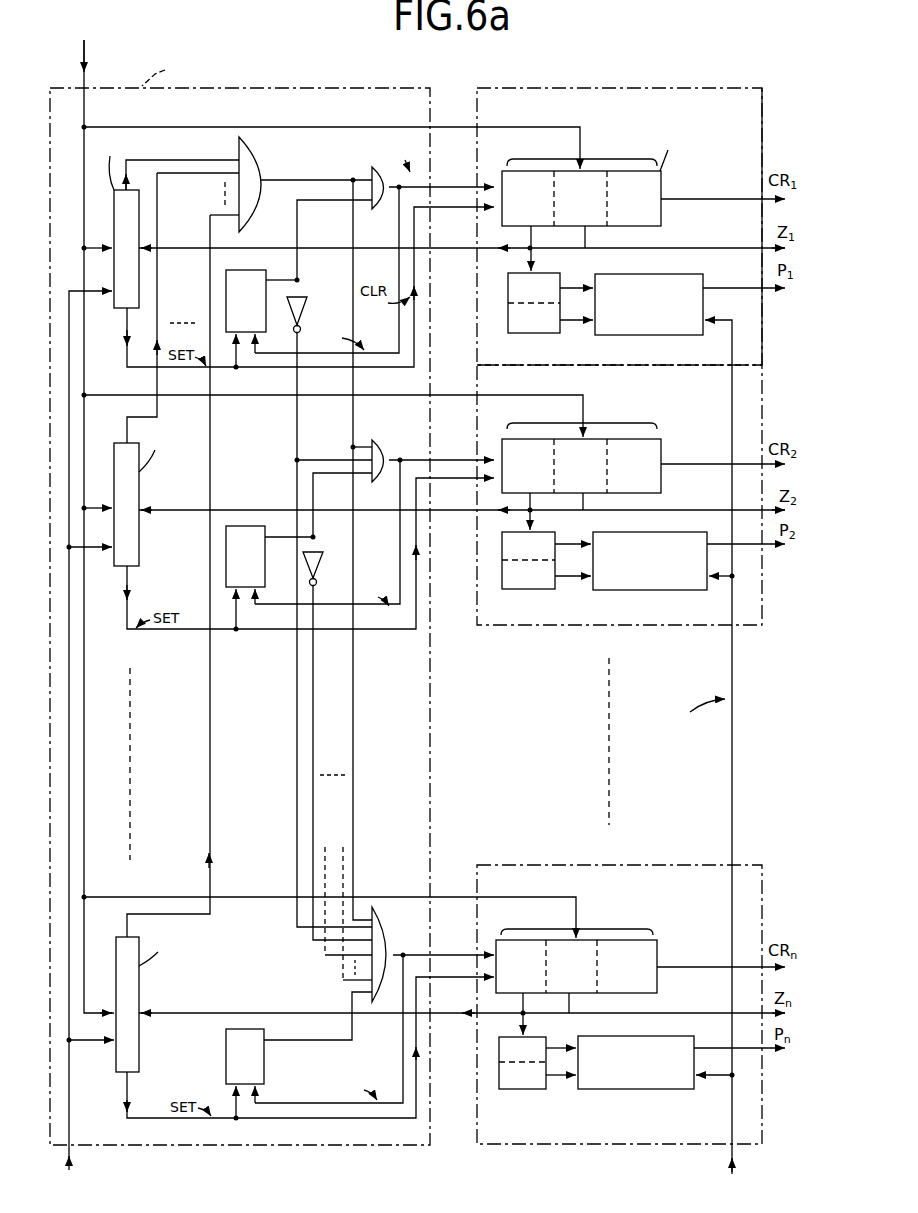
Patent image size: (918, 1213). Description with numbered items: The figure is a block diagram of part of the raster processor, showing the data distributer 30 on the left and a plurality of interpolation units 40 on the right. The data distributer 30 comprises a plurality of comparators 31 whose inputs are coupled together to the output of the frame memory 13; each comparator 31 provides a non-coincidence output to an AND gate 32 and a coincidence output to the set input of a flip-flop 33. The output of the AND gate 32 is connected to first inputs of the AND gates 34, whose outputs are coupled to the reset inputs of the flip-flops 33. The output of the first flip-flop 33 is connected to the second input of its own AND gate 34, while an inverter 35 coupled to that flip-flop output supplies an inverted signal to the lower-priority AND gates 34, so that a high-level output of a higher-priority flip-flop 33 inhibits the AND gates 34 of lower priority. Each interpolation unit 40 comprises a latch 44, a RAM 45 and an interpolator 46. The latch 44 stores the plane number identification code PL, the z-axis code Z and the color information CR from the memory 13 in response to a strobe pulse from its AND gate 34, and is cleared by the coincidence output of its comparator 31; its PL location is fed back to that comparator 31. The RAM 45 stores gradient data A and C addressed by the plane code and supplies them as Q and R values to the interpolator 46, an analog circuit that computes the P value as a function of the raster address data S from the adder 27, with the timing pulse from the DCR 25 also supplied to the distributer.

The frame memory 13 is at (327, 512).
The DCR timing pulse source 25 is at (221, 736).
The adder 27 is at (635, 750).
The data distributer 30 is at (372, 88).
The comparator 31 is at (120, 310).
The AND gate 32 is at (254, 162).
The flip-flop 33 is at (250, 270).
The AND gate 34 is at (372, 168).
The inverter 35 is at (305, 302).
The interpolation unit 40 is at (618, 88).
The latch 44 is at (661, 216).
The RAM 45 is at (545, 273).
The interpolator 46 is at (696, 276).